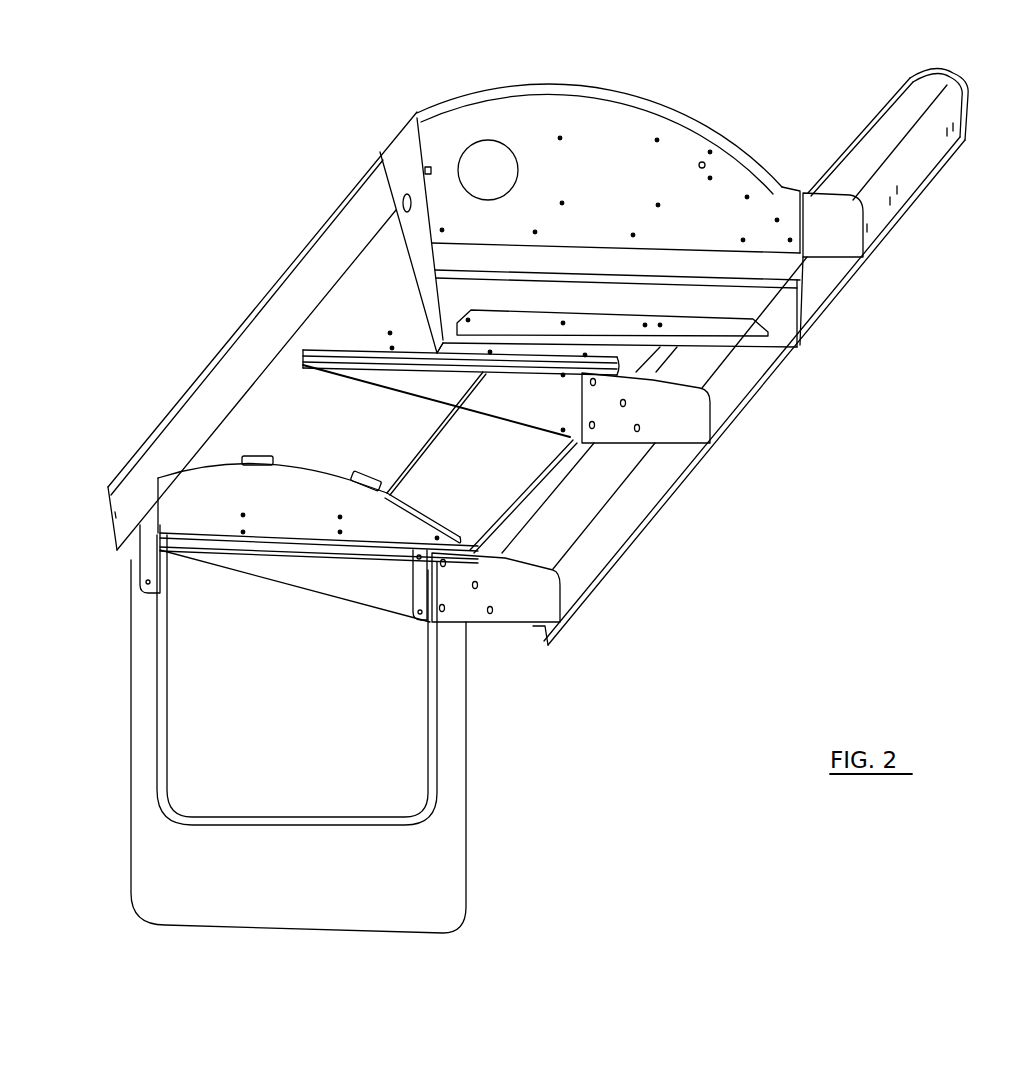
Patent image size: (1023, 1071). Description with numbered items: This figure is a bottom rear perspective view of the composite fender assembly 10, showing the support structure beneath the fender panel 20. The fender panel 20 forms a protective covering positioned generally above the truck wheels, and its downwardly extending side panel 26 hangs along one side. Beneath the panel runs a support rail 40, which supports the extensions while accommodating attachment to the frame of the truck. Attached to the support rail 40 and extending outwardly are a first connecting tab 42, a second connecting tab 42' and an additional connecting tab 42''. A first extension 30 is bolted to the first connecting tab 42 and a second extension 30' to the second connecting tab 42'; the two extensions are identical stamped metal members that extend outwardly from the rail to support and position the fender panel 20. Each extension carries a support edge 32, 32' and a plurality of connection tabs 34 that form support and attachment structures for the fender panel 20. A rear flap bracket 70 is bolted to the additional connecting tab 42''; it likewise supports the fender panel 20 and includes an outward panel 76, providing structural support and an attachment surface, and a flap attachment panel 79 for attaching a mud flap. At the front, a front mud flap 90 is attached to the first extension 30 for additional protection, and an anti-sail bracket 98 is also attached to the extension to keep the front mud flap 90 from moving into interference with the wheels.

The composite fender assembly 10 is at (197, 232).
The fender panel 20 is at (592, 78).
The side panel 26 is at (160, 477).
The first extension 30 is at (309, 570).
The second extension 30' is at (436, 430).
The support edge 32 is at (319, 562).
The support edge of second extension 32' is at (461, 366).
The connection tabs 34 is at (256, 458).
The support rail 40 is at (925, 172).
The first connecting tab 42 is at (533, 626).
The second connecting tab 42' is at (688, 434).
The additional connecting tab 42'' is at (881, 252).
The rear flap bracket 70 is at (815, 313).
The outward panel 76 is at (397, 170).
The flap attachment panel 79 is at (773, 318).
The front mud flap 90 is at (450, 862).
The anti-sail bracket 98 is at (432, 736).